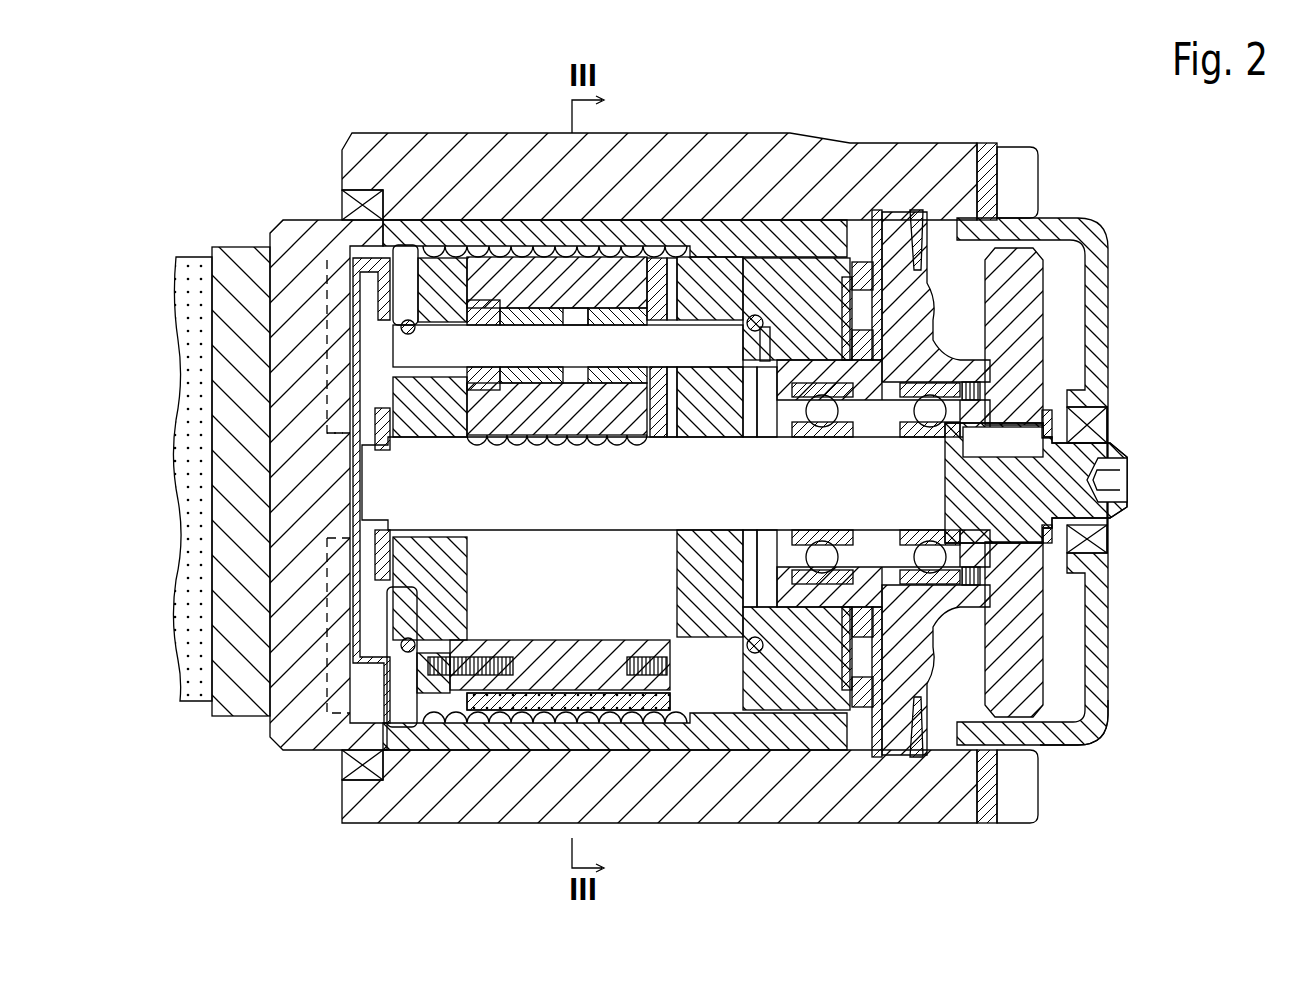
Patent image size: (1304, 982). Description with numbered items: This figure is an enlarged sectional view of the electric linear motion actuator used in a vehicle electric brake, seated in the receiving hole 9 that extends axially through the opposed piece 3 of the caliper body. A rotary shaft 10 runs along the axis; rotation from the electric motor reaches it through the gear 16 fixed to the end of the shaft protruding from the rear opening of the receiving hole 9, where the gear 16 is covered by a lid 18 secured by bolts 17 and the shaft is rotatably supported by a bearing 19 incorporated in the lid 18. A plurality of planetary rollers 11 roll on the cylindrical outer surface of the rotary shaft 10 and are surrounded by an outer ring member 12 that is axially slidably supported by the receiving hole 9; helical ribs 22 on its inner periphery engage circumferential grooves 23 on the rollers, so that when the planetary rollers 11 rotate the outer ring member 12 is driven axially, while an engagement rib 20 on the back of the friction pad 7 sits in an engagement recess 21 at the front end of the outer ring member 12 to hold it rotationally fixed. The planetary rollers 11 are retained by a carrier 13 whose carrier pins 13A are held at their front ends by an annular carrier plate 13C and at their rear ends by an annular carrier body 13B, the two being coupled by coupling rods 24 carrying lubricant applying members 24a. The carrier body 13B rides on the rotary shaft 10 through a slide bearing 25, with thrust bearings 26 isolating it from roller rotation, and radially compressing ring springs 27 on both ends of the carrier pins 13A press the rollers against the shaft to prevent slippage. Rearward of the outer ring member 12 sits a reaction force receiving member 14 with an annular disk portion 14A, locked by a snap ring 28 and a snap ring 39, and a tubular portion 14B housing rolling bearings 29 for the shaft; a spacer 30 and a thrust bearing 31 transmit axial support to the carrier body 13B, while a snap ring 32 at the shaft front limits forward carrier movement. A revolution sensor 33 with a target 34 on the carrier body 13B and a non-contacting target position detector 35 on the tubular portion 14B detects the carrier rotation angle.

The opposed piece 3 is at (358, 812).
The friction pad 7 is at (190, 302).
The receiving hole 9 is at (430, 747).
The rotary shaft 10 is at (1117, 452).
The planetary rollers 11 is at (519, 238).
The outer ring member 12 is at (466, 747).
The carrier 13 is at (700, 255).
The carrier pins 13A is at (483, 345).
The carrier body 13B is at (655, 263).
The carrier plate 13C is at (430, 265).
The reaction force receiving member 14 is at (927, 312).
The annular disk portion 14A is at (923, 312).
The tubular portion 14B is at (950, 367).
The gear 16 is at (1030, 613).
The bolts 17 is at (1025, 178).
The lid 18 is at (1110, 690).
The bearing 19 is at (1103, 537).
The engagement rib 20 is at (345, 470).
The engagement recess 21 is at (336, 540).
The helical ribs 22 is at (533, 732).
The circumferential grooves 23 is at (522, 442).
The coupling rods 24 is at (530, 648).
The lubricant applying members 24a is at (583, 705).
The slide bearing 25 is at (670, 440).
The thrust bearings 26 is at (643, 440).
The radially compressing ring springs 27 is at (400, 328).
The snap ring 28 is at (985, 195).
The rolling bearings 29 is at (812, 440).
The spacer 30 is at (812, 262).
The thrust bearing 31 is at (863, 283).
The snap ring 32 is at (385, 410).
The revolution sensor 33 is at (746, 330).
The target 34 is at (740, 440).
The target position detector 35 is at (770, 440).
The snap ring 39 is at (875, 305).